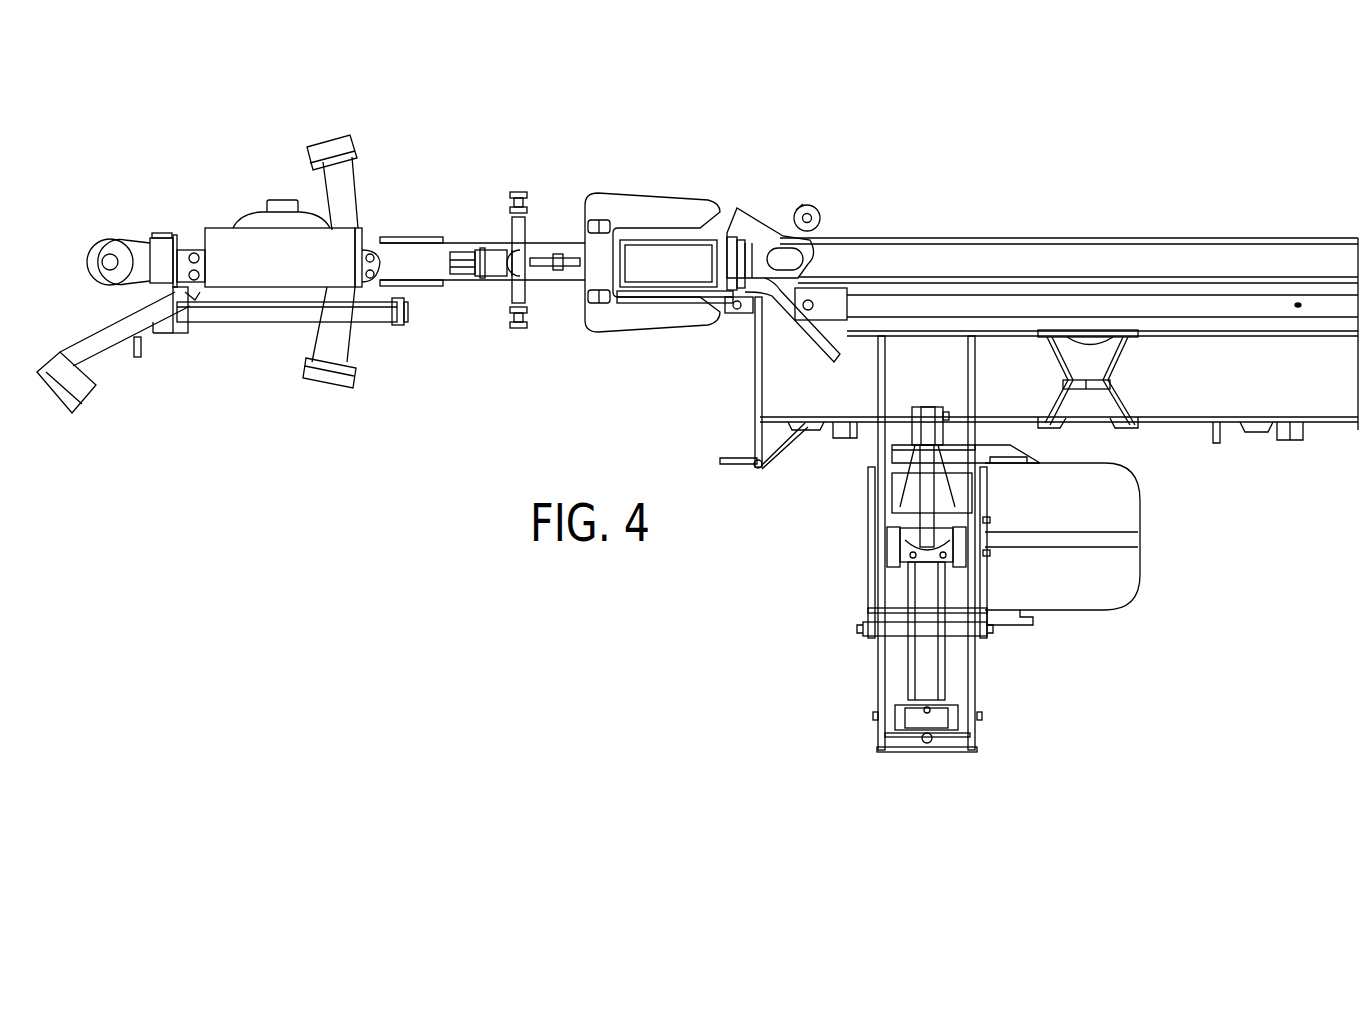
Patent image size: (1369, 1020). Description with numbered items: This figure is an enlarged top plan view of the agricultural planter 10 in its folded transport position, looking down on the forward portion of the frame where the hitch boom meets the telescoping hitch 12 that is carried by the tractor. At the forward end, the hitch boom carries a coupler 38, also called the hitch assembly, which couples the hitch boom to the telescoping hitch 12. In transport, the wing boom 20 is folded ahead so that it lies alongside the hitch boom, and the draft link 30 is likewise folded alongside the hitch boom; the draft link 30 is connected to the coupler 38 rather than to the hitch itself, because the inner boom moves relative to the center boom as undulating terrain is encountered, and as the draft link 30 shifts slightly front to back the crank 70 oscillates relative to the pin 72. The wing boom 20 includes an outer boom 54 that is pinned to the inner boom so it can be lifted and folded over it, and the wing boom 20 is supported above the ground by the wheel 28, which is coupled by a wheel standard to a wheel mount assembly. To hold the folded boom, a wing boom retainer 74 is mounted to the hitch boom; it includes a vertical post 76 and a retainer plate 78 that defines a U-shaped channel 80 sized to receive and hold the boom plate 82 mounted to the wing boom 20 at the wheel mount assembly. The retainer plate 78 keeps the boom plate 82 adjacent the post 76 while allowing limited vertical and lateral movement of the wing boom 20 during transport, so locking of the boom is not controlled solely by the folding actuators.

The agricultural planter 10 is at (306, 96).
The telescoping hitch 12 is at (877, 257).
The wing boom 20 is at (1151, 222).
The wheel 28 is at (1115, 590).
The draft link 30 is at (1010, 301).
The coupler 38 is at (238, 356).
The outer boom 54 is at (1193, 397).
The crank 70 is at (797, 216).
The pin 72 is at (780, 258).
The wing boom retainer 74 is at (568, 343).
The vertical post 76 is at (642, 248).
The retainer plate 78 is at (580, 190).
The U-shaped channel 80 is at (664, 303).
The boom plate 82 is at (797, 317).